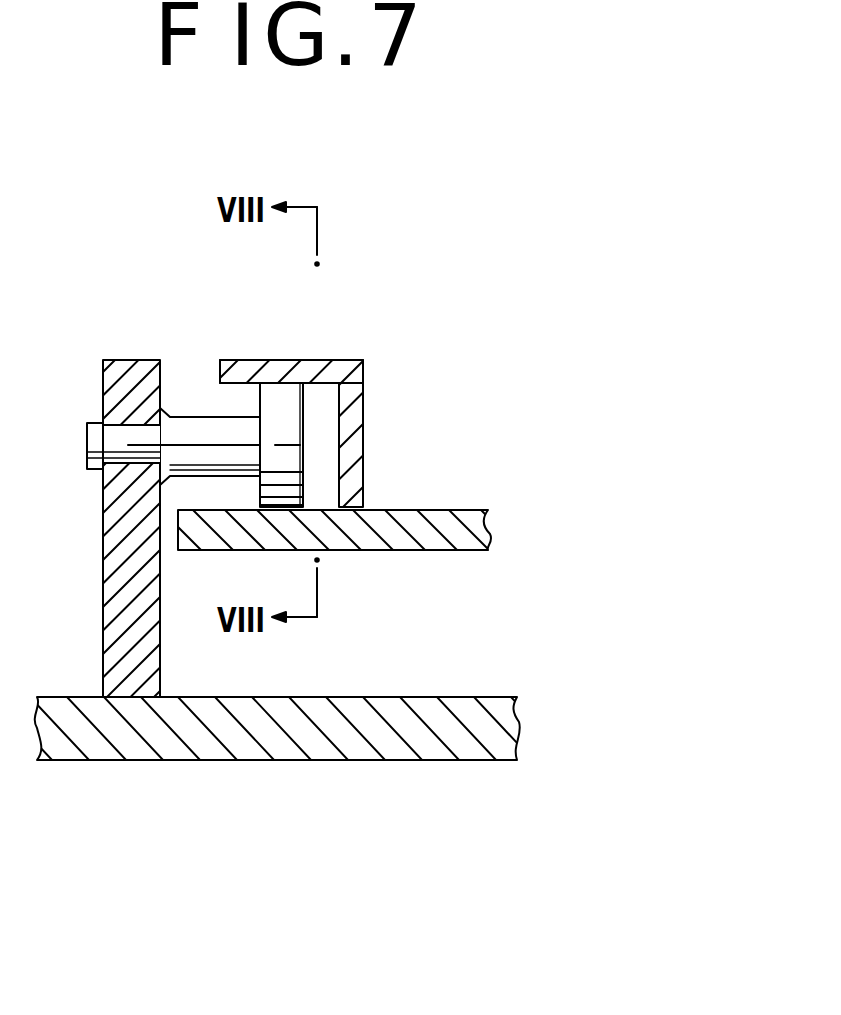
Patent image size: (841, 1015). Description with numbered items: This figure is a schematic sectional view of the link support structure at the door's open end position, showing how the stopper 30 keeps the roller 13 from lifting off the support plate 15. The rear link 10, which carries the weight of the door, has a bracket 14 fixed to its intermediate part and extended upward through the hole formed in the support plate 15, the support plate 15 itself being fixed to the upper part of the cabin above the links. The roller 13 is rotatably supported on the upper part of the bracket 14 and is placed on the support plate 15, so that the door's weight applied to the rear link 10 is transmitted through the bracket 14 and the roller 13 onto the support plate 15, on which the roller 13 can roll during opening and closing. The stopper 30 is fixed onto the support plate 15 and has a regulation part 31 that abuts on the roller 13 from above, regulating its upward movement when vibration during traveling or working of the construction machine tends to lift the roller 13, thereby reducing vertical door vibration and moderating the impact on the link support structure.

The rear link 10 is at (402, 755).
The roller 13 is at (272, 400).
The bracket 14 is at (127, 358).
The support plate 15 is at (420, 513).
The stopper 30 is at (365, 382).
The regulation part 31 is at (243, 360).